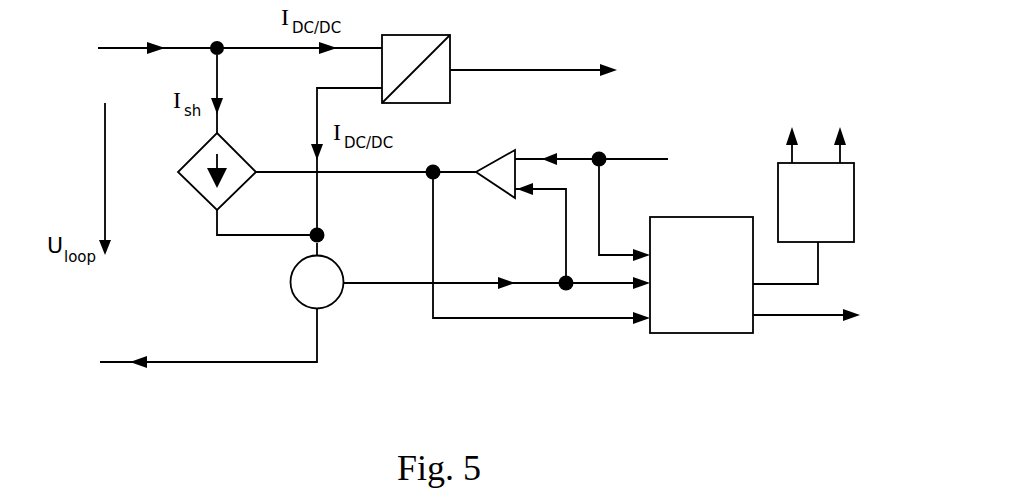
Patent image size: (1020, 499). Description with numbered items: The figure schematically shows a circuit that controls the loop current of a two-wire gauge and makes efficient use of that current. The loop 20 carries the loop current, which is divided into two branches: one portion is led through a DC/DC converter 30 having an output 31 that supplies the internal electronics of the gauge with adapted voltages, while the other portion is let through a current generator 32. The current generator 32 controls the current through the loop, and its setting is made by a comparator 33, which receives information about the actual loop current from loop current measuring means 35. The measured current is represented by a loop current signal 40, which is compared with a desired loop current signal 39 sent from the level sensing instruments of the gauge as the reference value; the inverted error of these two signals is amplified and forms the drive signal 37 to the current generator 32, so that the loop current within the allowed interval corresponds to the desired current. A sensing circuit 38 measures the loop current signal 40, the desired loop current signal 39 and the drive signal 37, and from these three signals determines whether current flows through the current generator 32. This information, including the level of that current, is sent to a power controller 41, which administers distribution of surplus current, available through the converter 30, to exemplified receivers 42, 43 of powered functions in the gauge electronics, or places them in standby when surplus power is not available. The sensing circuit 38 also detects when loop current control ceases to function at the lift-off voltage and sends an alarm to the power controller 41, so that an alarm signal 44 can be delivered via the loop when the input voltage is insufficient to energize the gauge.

The loop 20 is at (189, 187).
The DC/DC converter 30 is at (416, 69).
The output 31 is at (533, 63).
The current generator 32 is at (249, 188).
The comparator 33 is at (521, 216).
The loop current measuring means 35 is at (317, 276).
The drive signal 37 is at (541, 257).
The sensing circuit 38 is at (734, 275).
The desired loop current signal 39 is at (605, 204).
The loop current signal 40 is at (496, 292).
The power controller 41 is at (816, 202).
The receiver of surplus power 42 is at (790, 133).
The receiver of surplus power 43 is at (838, 133).
The alarm signal 44 is at (806, 330).